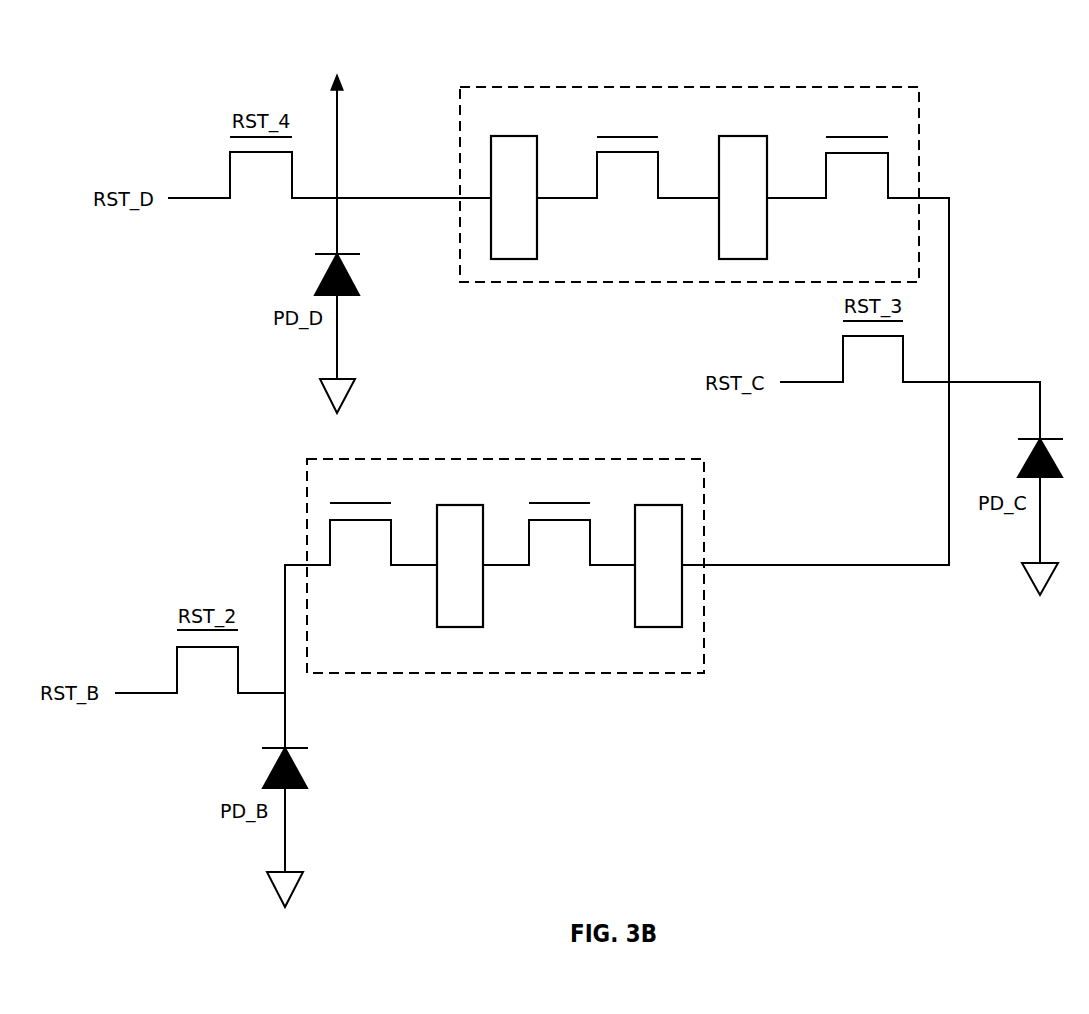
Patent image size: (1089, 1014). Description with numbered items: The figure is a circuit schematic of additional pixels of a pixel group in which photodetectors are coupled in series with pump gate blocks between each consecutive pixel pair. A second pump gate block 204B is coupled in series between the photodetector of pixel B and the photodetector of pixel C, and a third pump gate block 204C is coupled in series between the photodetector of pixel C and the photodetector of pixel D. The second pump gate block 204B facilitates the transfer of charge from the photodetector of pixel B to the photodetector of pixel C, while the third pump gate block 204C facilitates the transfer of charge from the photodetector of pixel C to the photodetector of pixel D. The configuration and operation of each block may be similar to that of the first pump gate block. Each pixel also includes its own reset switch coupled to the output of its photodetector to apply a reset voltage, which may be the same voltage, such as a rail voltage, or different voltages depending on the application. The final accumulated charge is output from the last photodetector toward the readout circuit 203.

The readout circuit 203 is at (336, 109).
The second pump gate block 204B is at (704, 530).
The third pump gate block 204C is at (919, 145).